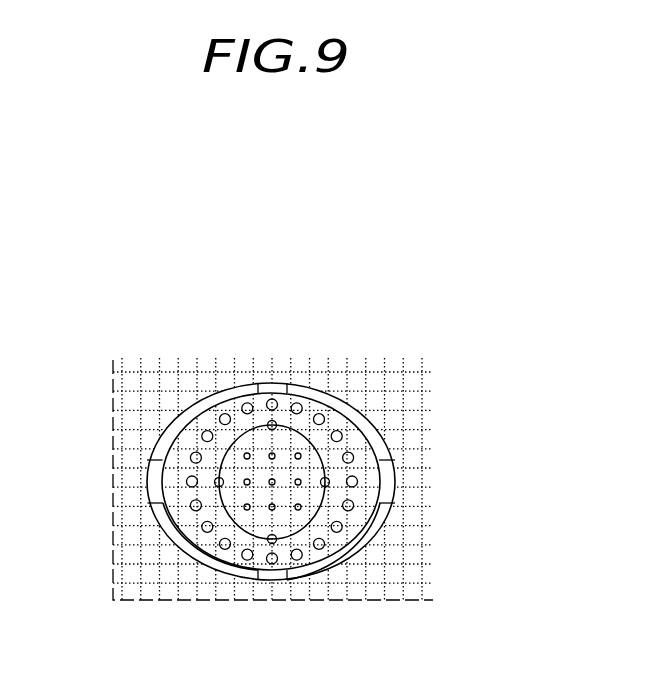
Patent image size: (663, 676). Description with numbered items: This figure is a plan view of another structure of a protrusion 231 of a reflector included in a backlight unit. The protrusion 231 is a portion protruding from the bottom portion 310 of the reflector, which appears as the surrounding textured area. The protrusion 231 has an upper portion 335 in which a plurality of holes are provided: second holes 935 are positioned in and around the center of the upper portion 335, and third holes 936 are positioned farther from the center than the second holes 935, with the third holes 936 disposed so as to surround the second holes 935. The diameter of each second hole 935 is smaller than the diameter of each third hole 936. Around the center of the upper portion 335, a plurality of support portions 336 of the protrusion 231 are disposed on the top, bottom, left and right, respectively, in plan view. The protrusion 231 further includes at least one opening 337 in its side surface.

The bottom portion 310 is at (113, 402).
The protrusion 231 is at (198, 382).
The second hole 935 is at (269, 392).
The third hole 936 is at (298, 451).
The upper portion 335 is at (209, 545).
The support portion 336 is at (150, 480).
The opening 337 is at (338, 561).